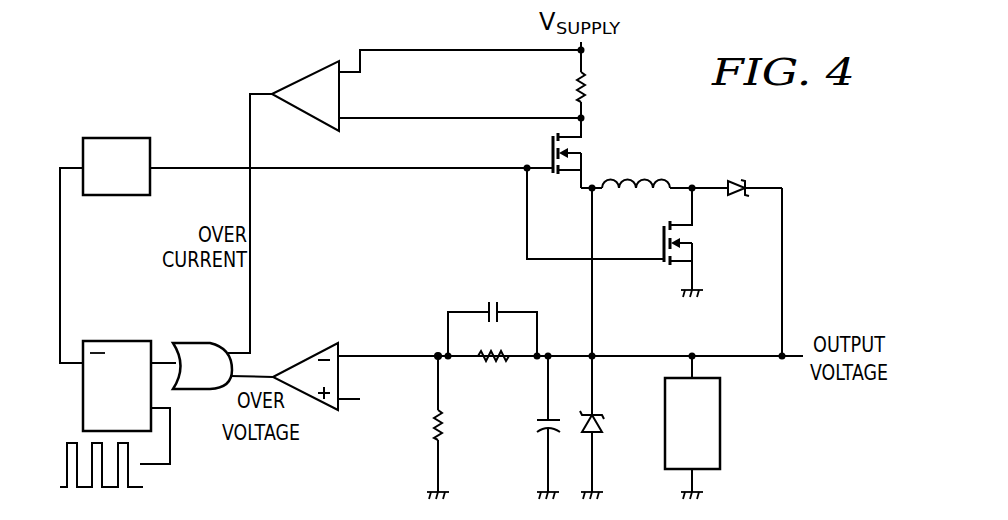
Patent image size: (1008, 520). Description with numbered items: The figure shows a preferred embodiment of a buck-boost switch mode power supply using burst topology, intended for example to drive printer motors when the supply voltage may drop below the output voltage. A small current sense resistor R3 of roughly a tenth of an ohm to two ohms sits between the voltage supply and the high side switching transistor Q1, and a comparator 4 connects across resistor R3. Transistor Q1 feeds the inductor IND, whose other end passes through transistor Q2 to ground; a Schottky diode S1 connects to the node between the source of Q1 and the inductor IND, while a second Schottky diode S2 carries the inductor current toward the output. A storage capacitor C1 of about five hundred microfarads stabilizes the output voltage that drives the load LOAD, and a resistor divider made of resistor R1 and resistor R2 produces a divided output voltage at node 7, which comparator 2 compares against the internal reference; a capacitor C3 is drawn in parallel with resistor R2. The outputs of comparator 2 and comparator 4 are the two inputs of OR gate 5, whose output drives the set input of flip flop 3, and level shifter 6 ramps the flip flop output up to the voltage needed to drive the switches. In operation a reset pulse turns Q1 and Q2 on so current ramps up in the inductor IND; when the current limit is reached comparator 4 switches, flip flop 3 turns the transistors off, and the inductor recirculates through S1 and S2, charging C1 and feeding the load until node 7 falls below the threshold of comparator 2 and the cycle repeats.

The comparator 2 is at (300, 363).
The flip flop 3 is at (118, 341).
The comparator 4 is at (300, 80).
The OR logic gate 5 is at (207, 343).
The level shifter 6 is at (116, 166).
The node 7 is at (438, 354).
The resistor R1 is at (452, 427).
The resistor R2 is at (493, 371).
The resistor R3 is at (599, 87).
The storage capacitor C1 is at (534, 427).
The capacitor C3 is at (492, 318).
The high side switching transistor Q1 is at (584, 153).
The transistor Q2 is at (695, 242).
The Schottky diode S1 is at (608, 455).
The Schottky diode S2 is at (755, 180).
The inductor IND is at (636, 193).
The load LOAD is at (692, 427).